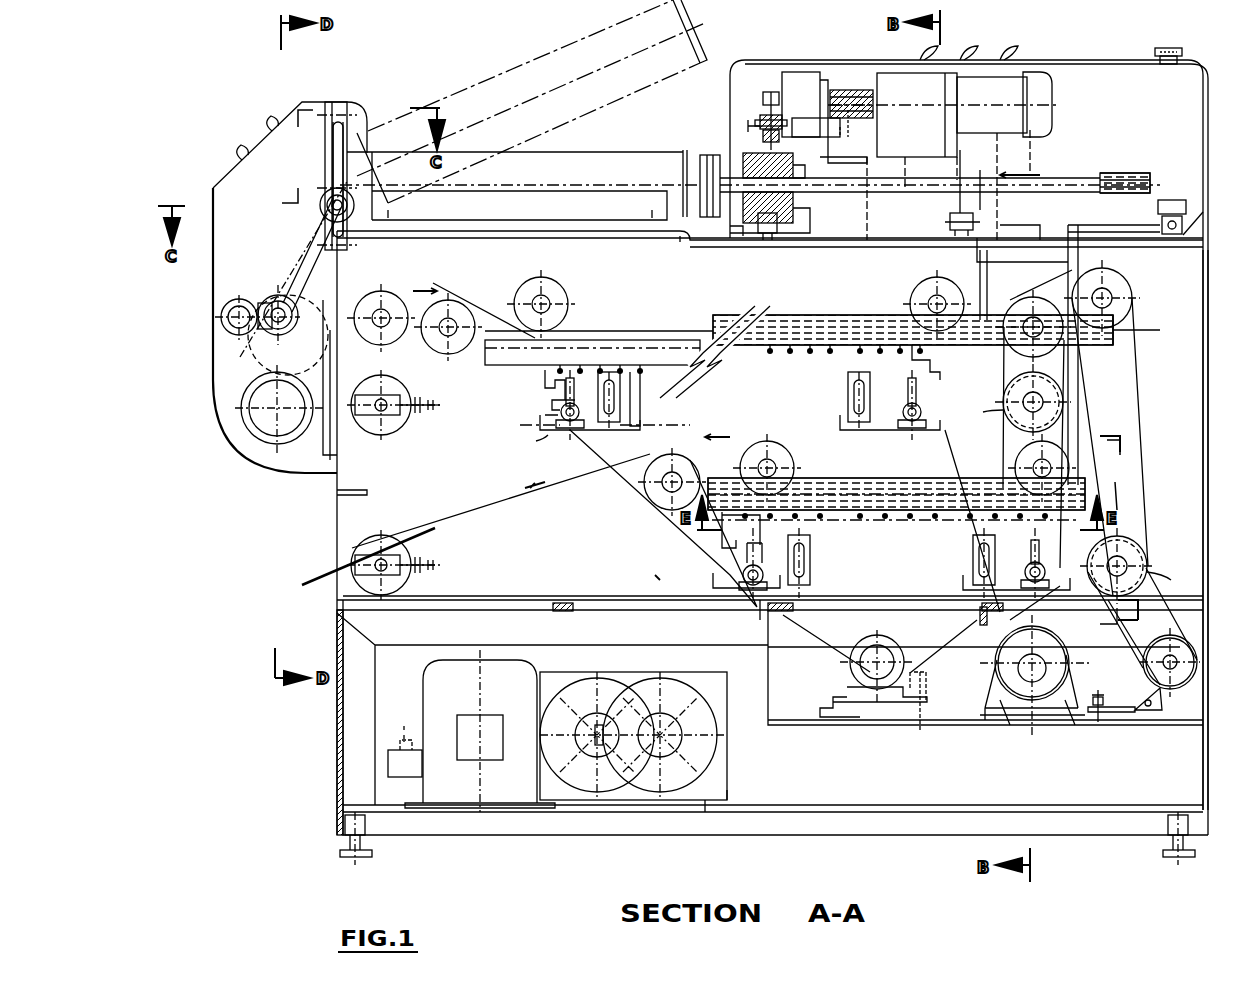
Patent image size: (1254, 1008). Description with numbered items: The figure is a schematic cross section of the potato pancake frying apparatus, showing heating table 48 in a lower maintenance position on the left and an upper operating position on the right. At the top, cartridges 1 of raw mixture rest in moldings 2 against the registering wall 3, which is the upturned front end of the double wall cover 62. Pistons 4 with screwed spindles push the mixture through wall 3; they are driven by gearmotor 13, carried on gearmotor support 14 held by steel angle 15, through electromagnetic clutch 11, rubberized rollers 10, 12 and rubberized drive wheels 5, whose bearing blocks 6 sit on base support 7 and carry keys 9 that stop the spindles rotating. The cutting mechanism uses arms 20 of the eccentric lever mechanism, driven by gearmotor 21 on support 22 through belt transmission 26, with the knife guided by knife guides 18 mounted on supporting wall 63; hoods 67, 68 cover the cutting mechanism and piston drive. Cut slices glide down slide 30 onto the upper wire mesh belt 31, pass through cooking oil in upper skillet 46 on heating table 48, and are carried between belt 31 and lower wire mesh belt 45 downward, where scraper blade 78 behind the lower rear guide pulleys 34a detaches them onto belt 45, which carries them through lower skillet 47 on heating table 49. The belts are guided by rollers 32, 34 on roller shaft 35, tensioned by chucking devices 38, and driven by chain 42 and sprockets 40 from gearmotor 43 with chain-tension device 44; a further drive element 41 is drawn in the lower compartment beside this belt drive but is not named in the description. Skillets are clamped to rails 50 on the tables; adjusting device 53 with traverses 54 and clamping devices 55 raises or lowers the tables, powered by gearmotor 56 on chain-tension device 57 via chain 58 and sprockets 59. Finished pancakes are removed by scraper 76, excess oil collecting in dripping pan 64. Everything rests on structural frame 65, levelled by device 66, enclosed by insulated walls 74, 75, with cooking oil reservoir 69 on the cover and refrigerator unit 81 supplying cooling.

The cartridge 1 is at (605, 152).
The molding 2 is at (565, 190).
The wall 3 is at (328, 164).
The piston 4 is at (710, 148).
The rubberized drive wheel 5 is at (770, 235).
The bearing block 6 is at (795, 222).
The base support 7 is at (735, 230).
The key 9 is at (793, 180).
The rubberized roller 10 is at (760, 118).
The electromagnetic clutch 11 is at (795, 72).
The rubberized roller 12 is at (772, 88).
The gearmotor 13 is at (1000, 135).
The gearmotor support 14 is at (840, 156).
The steel angle 15 is at (950, 232).
The knife guide 18 is at (340, 98).
The arm 20 is at (282, 270).
The gearmotor 21 is at (254, 440).
The support 22 is at (330, 445).
The belt transmission 26 is at (250, 352).
The slide 30 is at (350, 290).
The upper wire mesh belt 31 is at (458, 300).
The roller 32 is at (565, 285).
The roller 34 is at (1170, 576).
The lower rear guide pulley 34a is at (1003, 385).
The roller shaft 35 is at (1115, 296).
The chucking device 38 is at (436, 410).
The sprocket 40 is at (1005, 410).
The drive pulley 41 is at (1010, 668).
The chain 42 is at (1093, 682).
The gearmotor 43 is at (990, 707).
The chain-tension device 44 is at (1118, 715).
The lower wire mesh belt 45 is at (425, 520).
The upper skillet 46 is at (487, 368).
The lower skillet 47 is at (800, 465).
The upper heating table 48 is at (585, 370).
The lower heating table 49 is at (845, 518).
The rail 50 is at (540, 400).
The adjusting device 53 is at (540, 420).
The traverse 54 is at (565, 428).
The clamping device 55 is at (618, 436).
The gearmotor 56 is at (854, 674).
The chain-tension device 57 is at (863, 707).
The chain 58 is at (642, 492).
The sprocket 59 is at (900, 392).
The double wall cover 62 is at (415, 240).
The supporting wall 63 is at (340, 470).
The dripping pan 64 is at (652, 602).
The structural frame 65 is at (337, 752).
The levelling device 66 is at (342, 852).
The hood 67 is at (208, 370).
The hood 68 is at (1210, 170).
The cooking oil reservoir 69 is at (1185, 50).
The insulated wall 74 is at (1212, 290).
The insulated wall 75 is at (343, 616).
The scraper 76 is at (336, 560).
The scraper blade 78 is at (1080, 420).
The refrigerator unit 81 is at (498, 804).